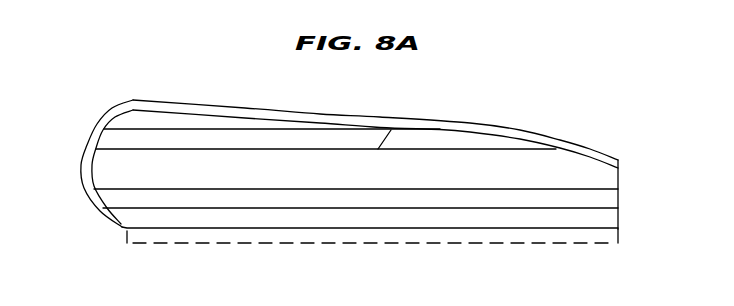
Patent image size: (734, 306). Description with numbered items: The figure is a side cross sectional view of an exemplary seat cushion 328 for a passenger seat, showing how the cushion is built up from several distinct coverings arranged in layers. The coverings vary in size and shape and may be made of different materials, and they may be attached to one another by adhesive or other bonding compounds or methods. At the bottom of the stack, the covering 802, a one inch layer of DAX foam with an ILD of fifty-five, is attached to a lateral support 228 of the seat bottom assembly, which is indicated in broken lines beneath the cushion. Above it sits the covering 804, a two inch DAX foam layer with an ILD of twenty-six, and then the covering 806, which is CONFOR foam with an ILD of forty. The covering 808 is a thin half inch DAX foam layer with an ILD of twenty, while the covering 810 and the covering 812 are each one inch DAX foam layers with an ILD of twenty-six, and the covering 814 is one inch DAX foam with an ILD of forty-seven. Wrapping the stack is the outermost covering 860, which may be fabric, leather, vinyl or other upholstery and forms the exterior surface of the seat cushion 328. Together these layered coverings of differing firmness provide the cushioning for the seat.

The seat cushion 328 is at (539, 103).
The covering 808 is at (291, 111).
The covering 810 is at (135, 109).
The covering 812 is at (97, 140).
The covering 814 is at (97, 198).
The outermost covering 860 is at (353, 116).
The covering 806 is at (428, 128).
The covering 804 is at (619, 180).
The covering 802 is at (619, 217).
The lateral support 228 is at (323, 243).